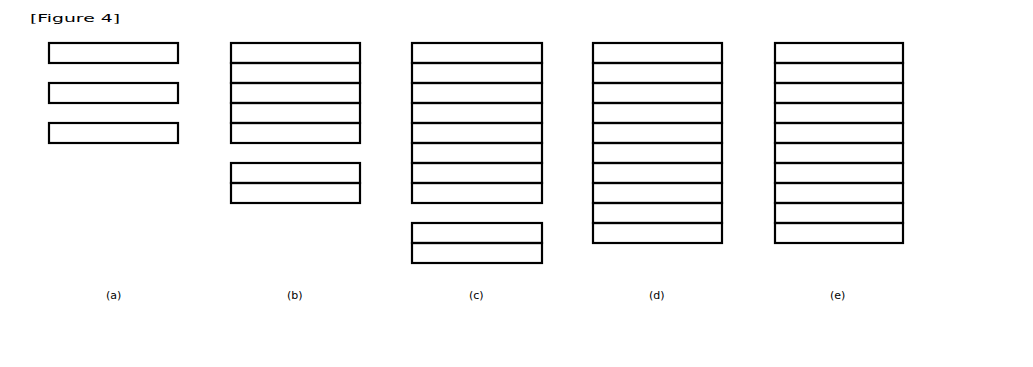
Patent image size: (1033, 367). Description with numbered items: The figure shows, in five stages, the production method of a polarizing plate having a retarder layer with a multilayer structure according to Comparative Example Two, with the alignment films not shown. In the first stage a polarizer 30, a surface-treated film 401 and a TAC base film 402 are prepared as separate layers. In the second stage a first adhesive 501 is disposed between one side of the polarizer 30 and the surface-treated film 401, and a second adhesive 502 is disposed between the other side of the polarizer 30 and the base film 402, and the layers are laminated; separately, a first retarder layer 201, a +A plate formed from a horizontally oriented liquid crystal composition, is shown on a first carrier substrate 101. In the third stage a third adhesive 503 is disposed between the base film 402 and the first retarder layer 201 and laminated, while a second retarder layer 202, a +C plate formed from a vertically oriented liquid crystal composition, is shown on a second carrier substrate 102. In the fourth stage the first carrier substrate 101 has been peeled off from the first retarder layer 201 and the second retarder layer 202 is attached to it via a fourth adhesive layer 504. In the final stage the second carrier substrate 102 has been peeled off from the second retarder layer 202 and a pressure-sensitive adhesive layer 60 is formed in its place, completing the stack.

The surface-treated film 401 is at (178, 50).
The base film 402 is at (178, 130).
The first adhesive 501 is at (360, 70).
The second adhesive 502 is at (360, 110).
The third adhesive 503 is at (542, 150).
The fourth adhesive layer 504 is at (722, 190).
The polarizer 30 is at (178, 90).
The first retarder layer 201 is at (360, 170).
The second retarder layer 202 is at (542, 230).
The first carrier substrate 101 is at (360, 190).
The second carrier substrate 102 is at (542, 250).
The pressure-sensitive adhesive layer 60 is at (903, 230).